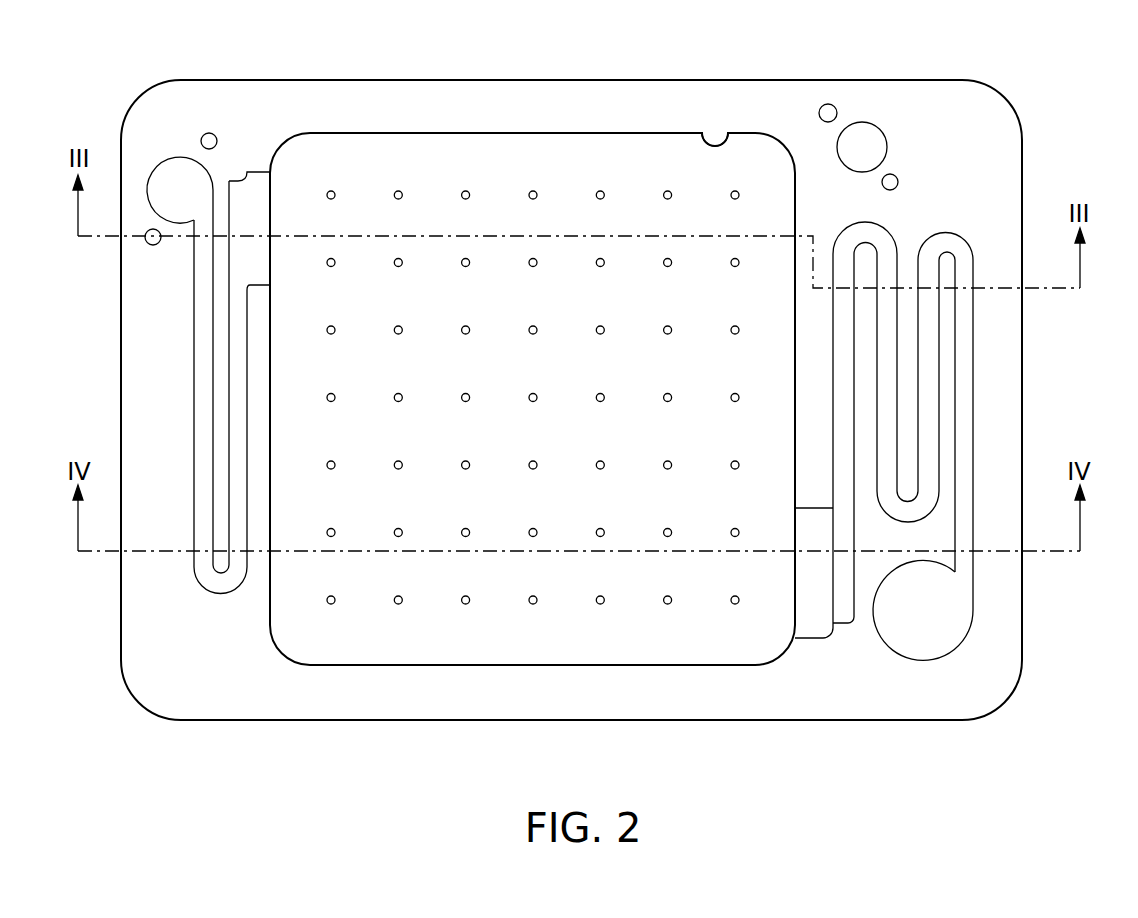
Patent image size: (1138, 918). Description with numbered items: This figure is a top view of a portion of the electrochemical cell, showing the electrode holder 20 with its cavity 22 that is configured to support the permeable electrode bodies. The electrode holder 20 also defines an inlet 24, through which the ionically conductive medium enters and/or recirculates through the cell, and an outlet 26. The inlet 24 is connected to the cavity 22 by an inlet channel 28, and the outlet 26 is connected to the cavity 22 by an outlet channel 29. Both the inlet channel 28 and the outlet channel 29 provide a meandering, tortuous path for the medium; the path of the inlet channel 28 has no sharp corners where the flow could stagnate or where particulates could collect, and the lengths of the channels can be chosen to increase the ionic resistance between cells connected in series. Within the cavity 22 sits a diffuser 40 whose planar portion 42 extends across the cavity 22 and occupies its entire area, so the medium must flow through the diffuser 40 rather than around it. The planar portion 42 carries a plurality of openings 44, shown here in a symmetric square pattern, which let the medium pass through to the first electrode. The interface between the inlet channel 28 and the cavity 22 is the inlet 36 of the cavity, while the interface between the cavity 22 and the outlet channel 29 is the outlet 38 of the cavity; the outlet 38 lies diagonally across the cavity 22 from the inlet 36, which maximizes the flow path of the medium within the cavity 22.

The electrode holder 20 is at (1000, 131).
The cavity 22 is at (729, 132).
The inlet 24 is at (172, 178).
The outlet 26 is at (948, 628).
The inlet channel 28 is at (200, 437).
The outlet channel 29 is at (965, 378).
The inlet of the cavity 36 is at (262, 201).
The outlet of the cavity 38 is at (803, 610).
The diffuser 40 is at (622, 173).
The planar portion 42 is at (520, 443).
The openings 44 is at (398, 190).